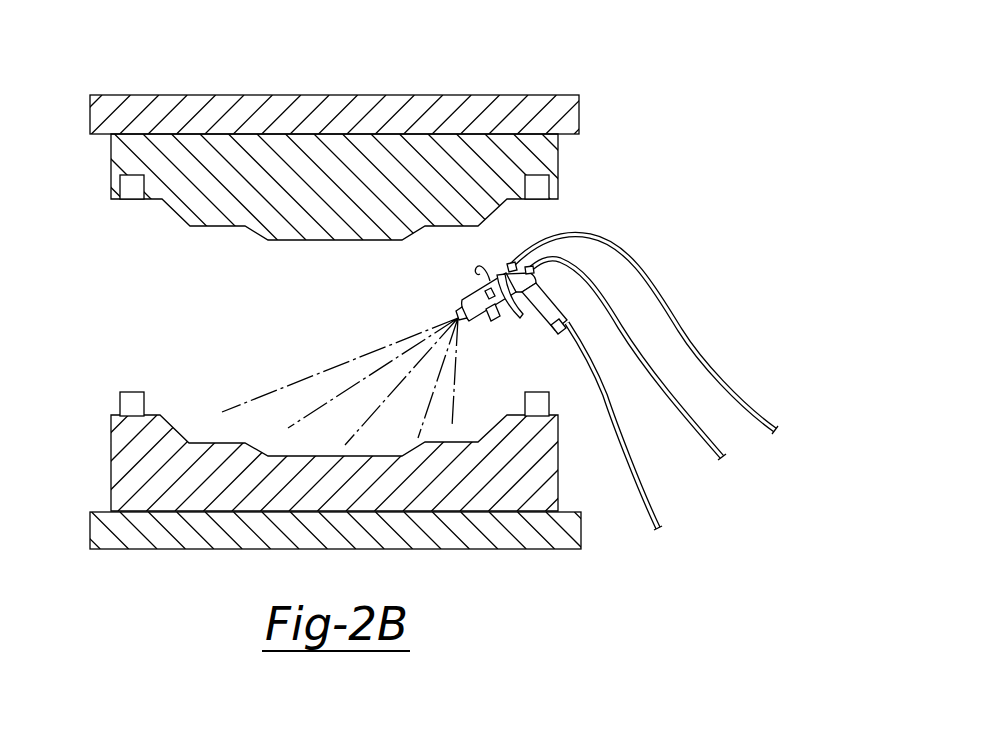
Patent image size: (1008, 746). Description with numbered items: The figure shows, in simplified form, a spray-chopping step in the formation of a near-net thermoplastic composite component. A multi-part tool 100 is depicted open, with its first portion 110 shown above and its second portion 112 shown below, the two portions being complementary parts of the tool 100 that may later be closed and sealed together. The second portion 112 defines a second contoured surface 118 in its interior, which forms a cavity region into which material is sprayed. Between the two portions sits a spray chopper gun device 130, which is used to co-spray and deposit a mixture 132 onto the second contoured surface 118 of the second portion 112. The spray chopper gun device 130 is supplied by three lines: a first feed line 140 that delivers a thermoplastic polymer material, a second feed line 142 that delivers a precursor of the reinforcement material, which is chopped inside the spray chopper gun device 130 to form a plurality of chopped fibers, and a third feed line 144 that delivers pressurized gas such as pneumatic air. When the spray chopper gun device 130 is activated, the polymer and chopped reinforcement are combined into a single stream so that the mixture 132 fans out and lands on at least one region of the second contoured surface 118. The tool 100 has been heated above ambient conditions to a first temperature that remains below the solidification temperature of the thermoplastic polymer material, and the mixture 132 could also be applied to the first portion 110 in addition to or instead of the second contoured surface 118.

The tool 100 is at (180, 59).
The first portion 110 is at (580, 123).
The second portion 112 is at (323, 455).
The second contoured surface 118 is at (208, 442).
The spray chopper gun device 130 is at (503, 266).
The mixture 132 is at (340, 362).
The first feed line 140 is at (712, 441).
The second feed line 142 is at (737, 397).
The third feed line 144 is at (644, 503).